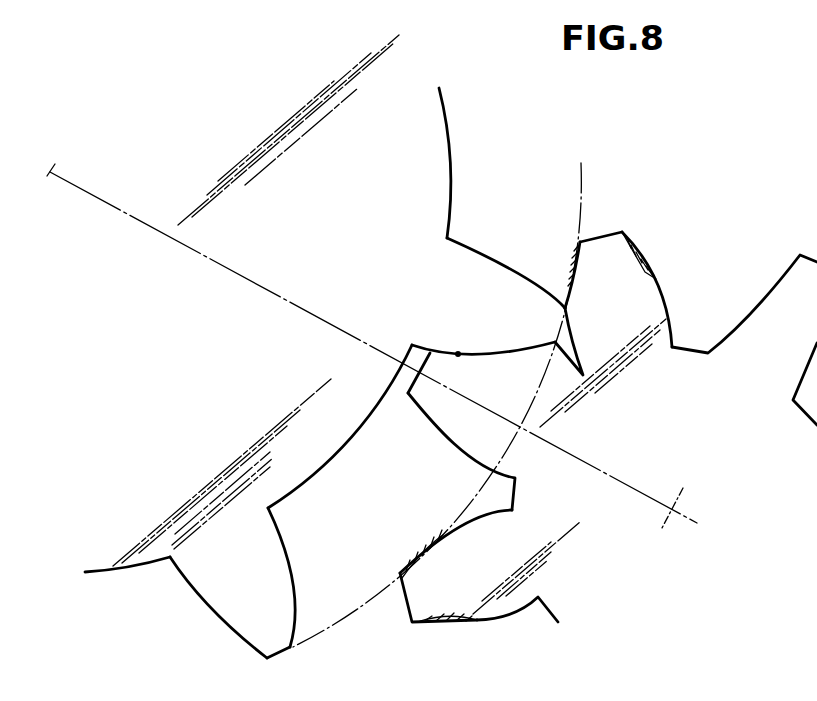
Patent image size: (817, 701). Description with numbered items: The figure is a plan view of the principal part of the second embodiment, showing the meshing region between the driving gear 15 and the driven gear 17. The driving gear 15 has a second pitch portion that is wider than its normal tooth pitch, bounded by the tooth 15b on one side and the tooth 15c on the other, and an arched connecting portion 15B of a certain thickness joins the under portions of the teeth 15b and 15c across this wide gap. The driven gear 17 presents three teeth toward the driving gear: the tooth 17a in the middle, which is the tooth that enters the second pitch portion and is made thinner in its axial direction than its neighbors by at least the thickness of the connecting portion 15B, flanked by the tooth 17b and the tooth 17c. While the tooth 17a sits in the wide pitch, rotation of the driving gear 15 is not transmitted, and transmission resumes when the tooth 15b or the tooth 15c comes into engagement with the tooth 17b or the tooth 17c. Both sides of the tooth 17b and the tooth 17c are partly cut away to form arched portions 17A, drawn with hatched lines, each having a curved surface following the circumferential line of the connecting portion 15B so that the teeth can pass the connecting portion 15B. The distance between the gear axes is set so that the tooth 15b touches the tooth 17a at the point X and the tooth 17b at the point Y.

The driving gear 15 is at (488, 221).
The tooth 15b is at (489, 275).
The tooth 15c is at (287, 560).
The arched connecting portion 15B is at (248, 509).
The driven gear 17 is at (573, 435).
The tooth 17a is at (437, 407).
The tooth 17b is at (625, 268).
The tooth 17c is at (420, 590).
The arched portion 17A is at (573, 277).
The contact point X is at (458, 353).
The contact point Y is at (567, 308).